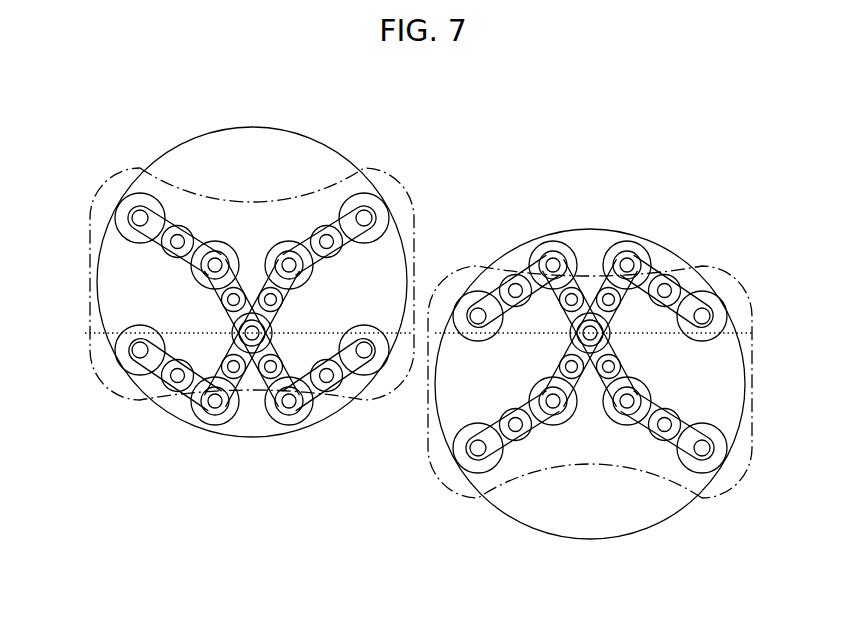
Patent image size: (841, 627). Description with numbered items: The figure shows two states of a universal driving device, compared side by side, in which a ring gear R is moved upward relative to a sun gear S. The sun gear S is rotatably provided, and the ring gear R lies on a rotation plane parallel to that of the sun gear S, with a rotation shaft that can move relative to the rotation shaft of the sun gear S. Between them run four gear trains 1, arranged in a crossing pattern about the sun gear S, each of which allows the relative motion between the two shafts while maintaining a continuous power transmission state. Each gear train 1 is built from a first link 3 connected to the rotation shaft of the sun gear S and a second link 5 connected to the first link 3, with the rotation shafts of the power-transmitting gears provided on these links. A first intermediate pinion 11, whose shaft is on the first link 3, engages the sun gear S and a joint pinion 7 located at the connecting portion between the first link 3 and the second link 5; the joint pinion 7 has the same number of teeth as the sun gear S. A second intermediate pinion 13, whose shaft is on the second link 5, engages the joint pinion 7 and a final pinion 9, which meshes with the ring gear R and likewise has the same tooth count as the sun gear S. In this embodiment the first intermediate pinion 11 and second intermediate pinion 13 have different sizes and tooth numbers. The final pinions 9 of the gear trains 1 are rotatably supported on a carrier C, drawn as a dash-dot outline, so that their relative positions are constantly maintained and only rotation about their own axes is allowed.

The gear train 1 is at (423, 337).
The first link 3 is at (222, 278).
The second link 5 is at (153, 243).
The joint pinion 7 is at (222, 257).
The final pinion 9 is at (140, 193).
The first intermediate pinion 11 is at (225, 305).
The second intermediate pinion 13 is at (185, 226).
The sun gear S is at (232, 337).
The ring gear R is at (240, 437).
The carrier C is at (394, 176).